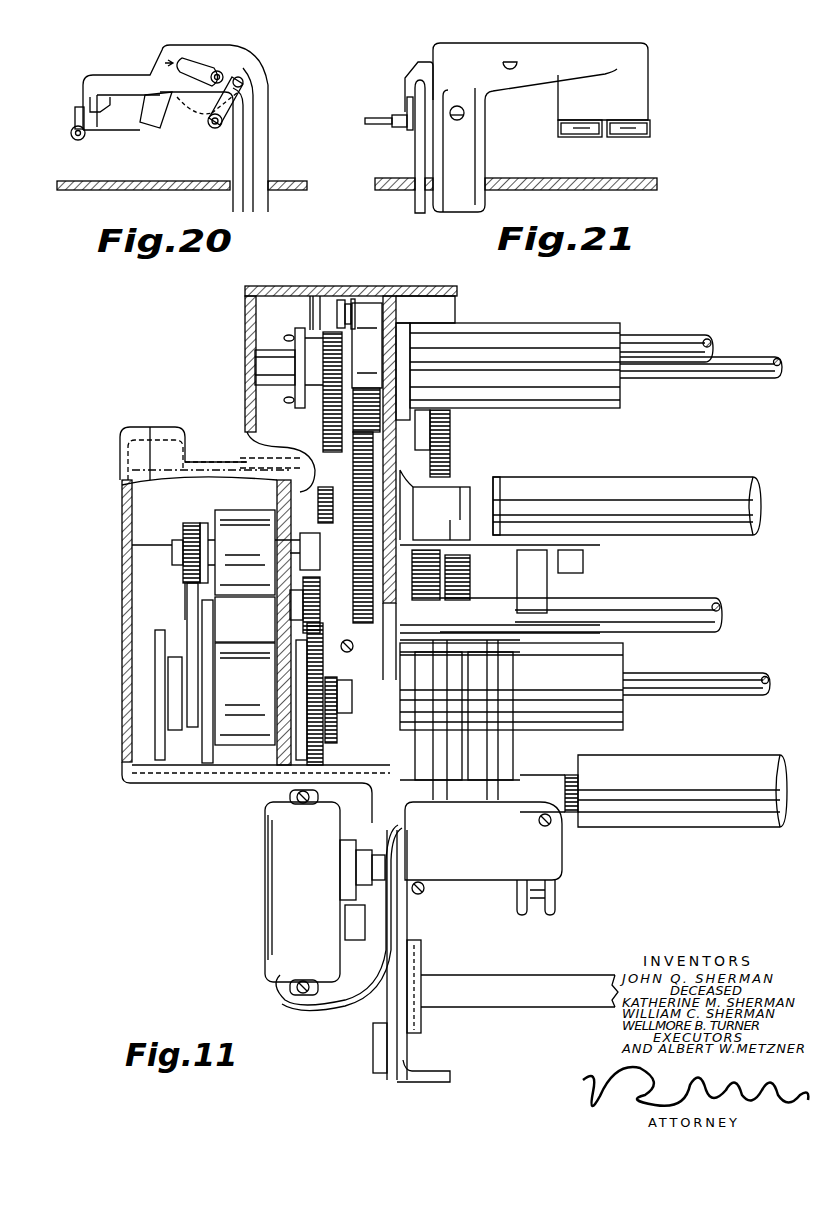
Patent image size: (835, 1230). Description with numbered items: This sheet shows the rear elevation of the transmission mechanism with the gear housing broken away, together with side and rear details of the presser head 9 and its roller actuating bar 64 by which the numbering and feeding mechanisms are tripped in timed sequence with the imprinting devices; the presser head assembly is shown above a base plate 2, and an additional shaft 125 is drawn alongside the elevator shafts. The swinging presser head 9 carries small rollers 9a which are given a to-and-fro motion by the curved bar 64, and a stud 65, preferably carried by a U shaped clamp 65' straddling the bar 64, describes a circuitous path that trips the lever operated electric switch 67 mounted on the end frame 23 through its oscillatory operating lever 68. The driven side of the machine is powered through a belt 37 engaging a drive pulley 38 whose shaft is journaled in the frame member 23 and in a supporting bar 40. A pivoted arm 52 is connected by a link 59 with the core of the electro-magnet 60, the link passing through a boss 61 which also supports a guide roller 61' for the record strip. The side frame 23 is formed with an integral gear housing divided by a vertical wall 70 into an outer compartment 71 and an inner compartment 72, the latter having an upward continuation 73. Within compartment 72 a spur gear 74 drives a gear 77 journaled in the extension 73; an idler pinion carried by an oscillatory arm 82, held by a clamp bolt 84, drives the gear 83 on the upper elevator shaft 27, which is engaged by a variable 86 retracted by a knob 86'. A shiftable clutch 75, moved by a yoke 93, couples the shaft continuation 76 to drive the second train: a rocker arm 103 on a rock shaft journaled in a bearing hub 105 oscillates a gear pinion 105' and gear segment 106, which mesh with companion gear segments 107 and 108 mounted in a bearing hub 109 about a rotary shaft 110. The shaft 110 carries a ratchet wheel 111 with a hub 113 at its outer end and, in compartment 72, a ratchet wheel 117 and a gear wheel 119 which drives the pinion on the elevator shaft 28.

In FIG. 20, the base plate 2 is at (72, 190).
In FIG. 21, the base plate 2 is at (658, 190).
In FIG. 20, the presser head 9 is at (110, 85).
In FIG. 21, the presser head 9 is at (637, 87).
In FIG. 20, the rollers 9a is at (85, 138).
In FIG. 21, the rollers 9a is at (568, 138).
In FIG. 20, the curved bar 64 is at (248, 115).
In FIG. 21, the curved bar 64 is at (418, 150).
In FIG. 20, the stud 65 is at (223, 120).
In FIG. 21, the stud 65 is at (367, 128).
In FIG. 20, the U shaped clamp 65' is at (272, 55).
In FIG. 21, the U shaped clamp 65' is at (392, 96).
In FIG. 11, the side frame 23 is at (396, 290).
In FIG. 11, the upper elevator shaft 27 is at (716, 380).
In FIG. 11, the elevator shaft 28 is at (716, 695).
In FIG. 11, the belt 37 is at (525, 915).
In FIG. 11, the drive pulley 38 is at (547, 592).
In FIG. 11, the supporting bar 40 is at (583, 560).
In FIG. 11, the arm 52 is at (445, 445).
In FIG. 11, the link 59 is at (460, 470).
In FIG. 11, the electro-magnet 60 is at (510, 670).
In FIG. 11, the boss 61 is at (504, 495).
In FIG. 11, the guide roller 61' is at (627, 489).
In FIG. 11, the electric switch 67 is at (300, 915).
In FIG. 11, the operating lever 68 is at (370, 867).
In FIG. 11, the vertical wall 70 is at (278, 495).
In FIG. 11, the outer compartment 71 is at (255, 625).
In FIG. 11, the inner compartment 72 is at (358, 738).
In FIG. 11, the upward continuation 73 is at (311, 296).
In FIG. 11, the spur gear 74 is at (354, 625).
In FIG. 11, the shiftable clutch 75 is at (347, 490).
In FIG. 11, the shaft continuation 76 is at (172, 557).
In FIG. 11, the gear 77 is at (323, 425).
In FIG. 11, the oscillatory arm 82 is at (352, 320).
In FIG. 11, the driven gear 83 is at (339, 300).
In FIG. 11, the clamp bolt 84 is at (345, 310).
In FIG. 11, the variable 86 is at (296, 329).
In FIG. 11, the knob 86' is at (244, 365).
In FIG. 11, the yoke 93 is at (318, 508).
In FIG. 11, the rocker arm 103 is at (290, 600).
In FIG. 11, the bearing hub 105 is at (245, 552).
In FIG. 11, the gear pinion 105' is at (136, 547).
In FIG. 11, the gear segment 106 is at (195, 618).
In FIG. 11, the gear segment 107 is at (205, 585).
In FIG. 11, the gear segment 108 is at (210, 770).
In FIG. 11, the bearing hub 109 is at (245, 694).
In FIG. 11, the rotary shaft 110 is at (352, 694).
In FIG. 11, the ratchet wheel 111 is at (160, 762).
In FIG. 11, the hub 113 is at (178, 735).
In FIG. 11, the ratchet wheel 117 is at (337, 728).
In FIG. 11, the gear wheel 119 is at (330, 757).
In FIG. 11, the shaft 125 is at (670, 335).